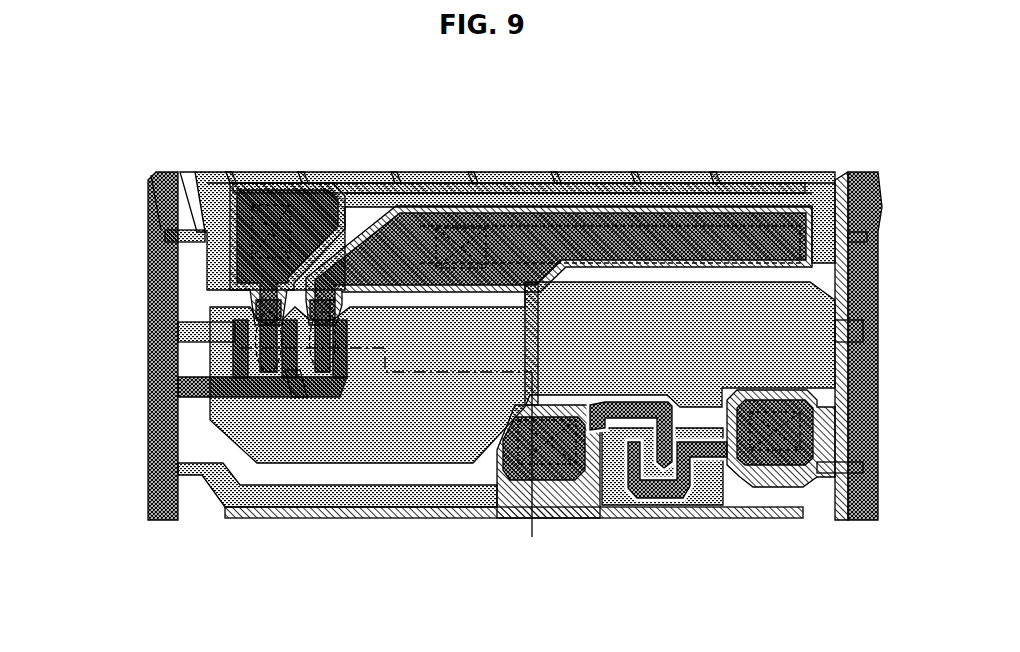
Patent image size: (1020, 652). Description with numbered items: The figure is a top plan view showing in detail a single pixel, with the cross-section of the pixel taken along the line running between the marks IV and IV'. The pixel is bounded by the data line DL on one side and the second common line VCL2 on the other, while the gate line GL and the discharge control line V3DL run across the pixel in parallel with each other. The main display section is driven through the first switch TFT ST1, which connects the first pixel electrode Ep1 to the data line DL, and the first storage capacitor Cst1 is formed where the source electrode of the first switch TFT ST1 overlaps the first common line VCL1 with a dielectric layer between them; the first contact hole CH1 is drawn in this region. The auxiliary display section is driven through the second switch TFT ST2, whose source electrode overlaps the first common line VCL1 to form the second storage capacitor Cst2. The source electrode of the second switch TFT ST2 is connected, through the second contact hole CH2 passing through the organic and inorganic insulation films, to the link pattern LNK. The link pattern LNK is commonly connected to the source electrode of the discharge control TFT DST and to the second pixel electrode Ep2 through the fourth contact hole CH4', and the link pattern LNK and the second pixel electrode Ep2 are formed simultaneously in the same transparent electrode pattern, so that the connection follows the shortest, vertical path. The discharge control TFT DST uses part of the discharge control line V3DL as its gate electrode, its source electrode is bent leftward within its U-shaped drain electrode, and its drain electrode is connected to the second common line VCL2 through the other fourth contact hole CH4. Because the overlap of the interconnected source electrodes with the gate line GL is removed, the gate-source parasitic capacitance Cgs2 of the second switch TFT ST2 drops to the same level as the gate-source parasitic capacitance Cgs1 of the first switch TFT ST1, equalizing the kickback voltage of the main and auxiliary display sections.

The first contact hole CH1 is at (277, 198).
The first storage capacitor Cst1 is at (315, 181).
The second contact hole CH2 is at (457, 221).
The second storage capacitor Cst2 is at (594, 208).
The first pixel electrode Ep1 is at (798, 180).
The second common line VCL2 is at (863, 188).
The first common line VCL1 is at (165, 236).
The gate line GL is at (165, 332).
The data line DL is at (148, 401).
The discharge control line V3DL is at (165, 470).
The section line IV is at (374, 358).
The first switch TFT ST1 is at (258, 407).
The gate-source parasitic capacitance of the first switch TFT Cgs1 is at (277, 390).
The gate-source parasitic capacitance of the second switch TFT Cgs2 is at (327, 390).
The second switch TFT ST2 is at (349, 412).
The second pixel electrode Ep2 is at (398, 519).
The link pattern LNK is at (527, 392).
The section line IV' is at (531, 465).
The fourth contact hole CH4' is at (548, 487).
The discharge control TFT DST is at (658, 523).
The fourth contact hole CH4 is at (781, 479).